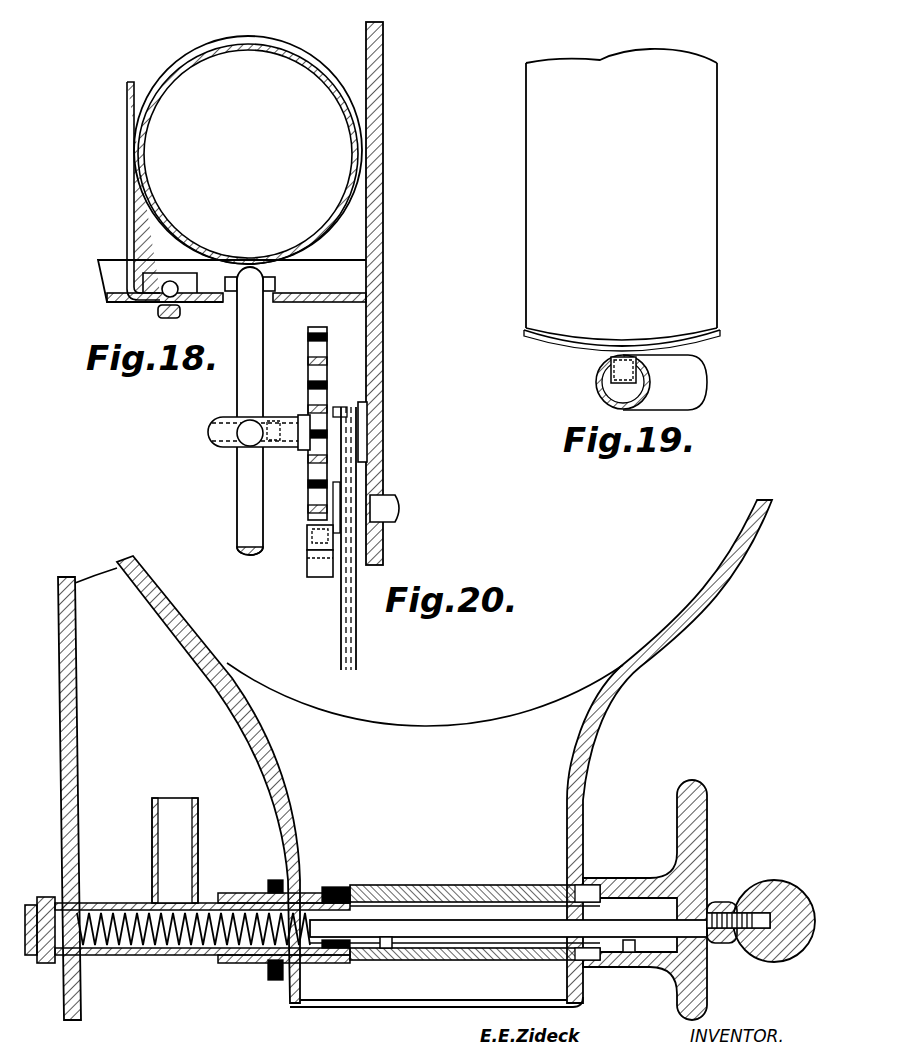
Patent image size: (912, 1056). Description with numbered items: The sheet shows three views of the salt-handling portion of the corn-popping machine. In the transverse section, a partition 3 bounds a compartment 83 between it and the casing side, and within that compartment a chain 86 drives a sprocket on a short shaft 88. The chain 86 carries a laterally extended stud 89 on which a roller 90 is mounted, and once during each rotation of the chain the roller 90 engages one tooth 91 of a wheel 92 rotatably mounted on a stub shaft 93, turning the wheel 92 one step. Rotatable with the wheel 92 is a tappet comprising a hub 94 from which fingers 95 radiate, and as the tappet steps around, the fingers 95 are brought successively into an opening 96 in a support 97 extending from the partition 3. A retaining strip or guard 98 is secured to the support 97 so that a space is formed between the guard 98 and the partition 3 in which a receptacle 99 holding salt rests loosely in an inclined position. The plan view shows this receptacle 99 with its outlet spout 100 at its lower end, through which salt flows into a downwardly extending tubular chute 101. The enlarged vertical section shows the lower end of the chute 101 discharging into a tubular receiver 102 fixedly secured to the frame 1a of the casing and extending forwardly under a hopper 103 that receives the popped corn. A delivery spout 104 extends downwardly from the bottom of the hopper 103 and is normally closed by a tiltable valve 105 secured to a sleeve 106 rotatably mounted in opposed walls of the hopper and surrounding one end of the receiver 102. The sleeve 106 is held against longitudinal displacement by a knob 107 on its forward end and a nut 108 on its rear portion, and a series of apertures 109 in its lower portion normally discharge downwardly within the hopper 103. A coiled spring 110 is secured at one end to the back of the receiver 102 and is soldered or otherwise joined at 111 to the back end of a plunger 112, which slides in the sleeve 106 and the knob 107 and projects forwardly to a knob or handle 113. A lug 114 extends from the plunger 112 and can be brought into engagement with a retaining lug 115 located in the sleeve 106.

In FIG. 18, the partition 3 is at (382, 154).
In FIG. 18, the receptacle 99 is at (291, 57).
In FIG. 19, the receptacle 99 is at (622, 200).
In FIG. 18, the retaining strip or guard 98 is at (127, 168).
In FIG. 18, the support 97 is at (357, 280).
In FIG. 18, the opening 96 is at (277, 292).
In FIG. 18, the fingers 95 is at (262, 348).
In FIG. 18, the wheel 92 is at (327, 371).
In FIG. 18, the tooth 91 is at (323, 385).
In FIG. 18, the hub 94 is at (268, 418).
In FIG. 18, the stub shaft 93 is at (277, 448).
In FIG. 18, the short shaft 88 is at (398, 498).
In FIG. 18, the stud 89 is at (303, 558).
In FIG. 18, the roller 90 is at (320, 574).
In FIG. 18, the chain 86 is at (357, 633).
In FIG. 18, the compartment 83 is at (350, 326).
In FIG. 19, the outlet spout 100 is at (623, 362).
In FIG. 19, the chute 101 is at (698, 374).
In FIG. 20, the chute 101 is at (198, 848).
In FIG. 20, the hopper 103 is at (378, 730).
In FIG. 20, the frame 1a is at (78, 757).
In FIG. 20, the delivery spout 104 is at (326, 993).
In FIG. 20, the apertures 109 is at (430, 960).
In FIG. 20, the knob 107 is at (677, 848).
In FIG. 20, the sleeve 106 is at (416, 885).
In FIG. 20, the tiltable valve 105 is at (508, 885).
In FIG. 20, the nut 108 is at (270, 882).
In FIG. 20, the joint 111 is at (350, 892).
In FIG. 20, the tubular receiver 102 is at (165, 956).
In FIG. 20, the coiled spring 110 is at (125, 917).
In FIG. 20, the plunger 112 is at (453, 920).
In FIG. 20, the knob or handle 113 is at (770, 885).
In FIG. 20, the lug 114 is at (385, 949).
In FIG. 20, the retaining lug 115 is at (631, 953).